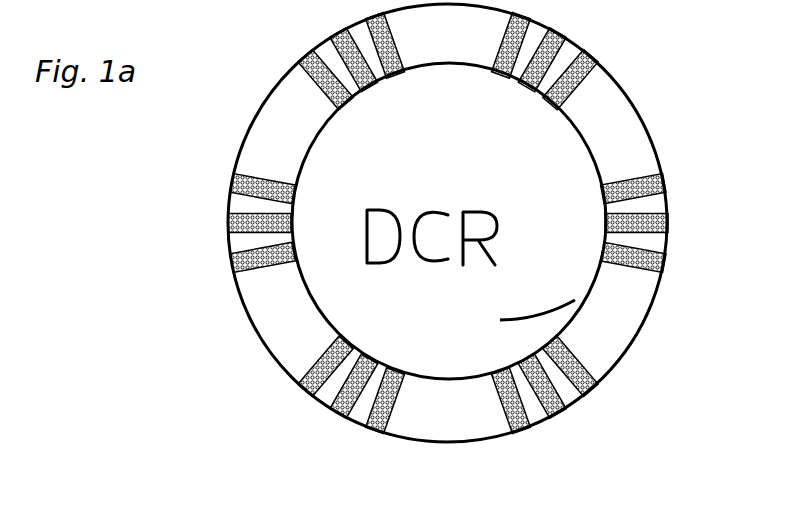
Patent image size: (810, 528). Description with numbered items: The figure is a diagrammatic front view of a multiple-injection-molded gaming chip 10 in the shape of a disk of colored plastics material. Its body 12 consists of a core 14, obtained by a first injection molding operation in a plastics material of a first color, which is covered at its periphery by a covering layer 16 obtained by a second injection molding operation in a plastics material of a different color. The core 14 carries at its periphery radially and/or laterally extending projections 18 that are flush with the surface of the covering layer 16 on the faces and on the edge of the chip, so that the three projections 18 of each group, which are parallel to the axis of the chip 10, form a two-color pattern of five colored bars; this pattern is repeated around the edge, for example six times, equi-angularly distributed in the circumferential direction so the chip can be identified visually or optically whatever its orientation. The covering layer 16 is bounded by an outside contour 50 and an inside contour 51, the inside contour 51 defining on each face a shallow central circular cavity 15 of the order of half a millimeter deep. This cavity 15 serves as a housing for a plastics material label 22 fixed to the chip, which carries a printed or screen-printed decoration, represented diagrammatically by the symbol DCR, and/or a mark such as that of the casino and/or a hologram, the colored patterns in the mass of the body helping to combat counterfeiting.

The gaming chip 10 is at (256, 59).
The body 12 is at (646, 124).
The core 14 is at (610, 82).
The shallow central cavity 15 is at (429, 374).
The covering layer 16 is at (625, 337).
The projections 18 is at (667, 190).
The plastics material label 22 is at (557, 193).
The outside contour 50 is at (254, 338).
The inside contour 51 is at (309, 283).